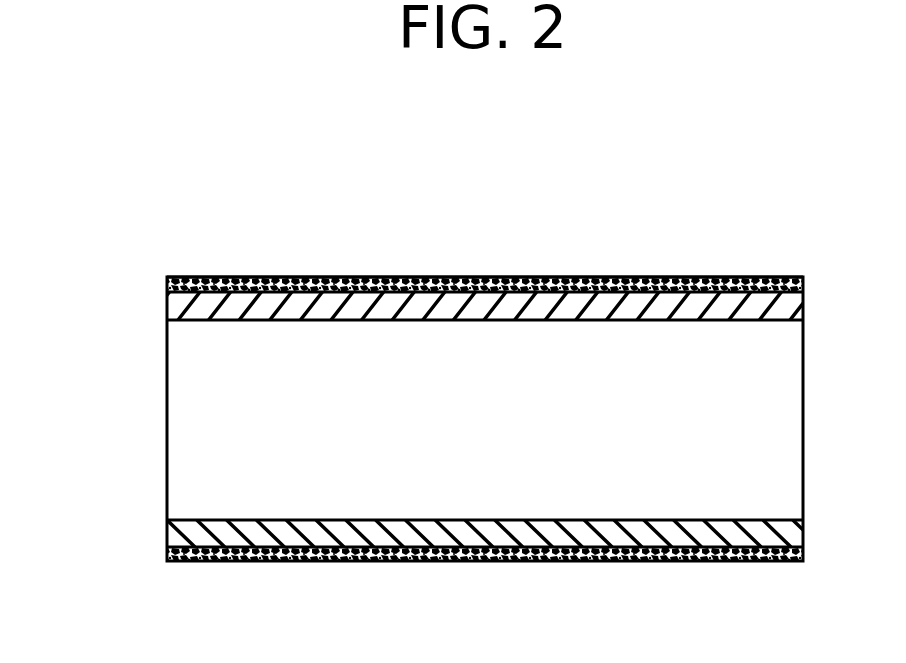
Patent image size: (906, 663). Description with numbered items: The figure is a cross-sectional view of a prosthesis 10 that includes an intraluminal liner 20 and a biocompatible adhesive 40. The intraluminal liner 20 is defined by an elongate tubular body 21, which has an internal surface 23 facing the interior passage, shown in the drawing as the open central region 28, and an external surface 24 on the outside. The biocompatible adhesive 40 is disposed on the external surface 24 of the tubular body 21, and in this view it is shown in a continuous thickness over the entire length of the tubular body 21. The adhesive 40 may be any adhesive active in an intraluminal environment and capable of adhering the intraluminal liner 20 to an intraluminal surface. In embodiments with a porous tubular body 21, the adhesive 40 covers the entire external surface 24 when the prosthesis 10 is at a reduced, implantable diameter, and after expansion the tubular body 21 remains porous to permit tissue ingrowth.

The prosthesis 10 is at (256, 141).
The intraluminal liner 20 is at (482, 300).
The elongate tubular body 21 is at (390, 290).
The internal surface 23 is at (685, 321).
The external surface 24 is at (602, 285).
The lumen 28 is at (198, 423).
The biocompatible adhesive 40 is at (287, 277).